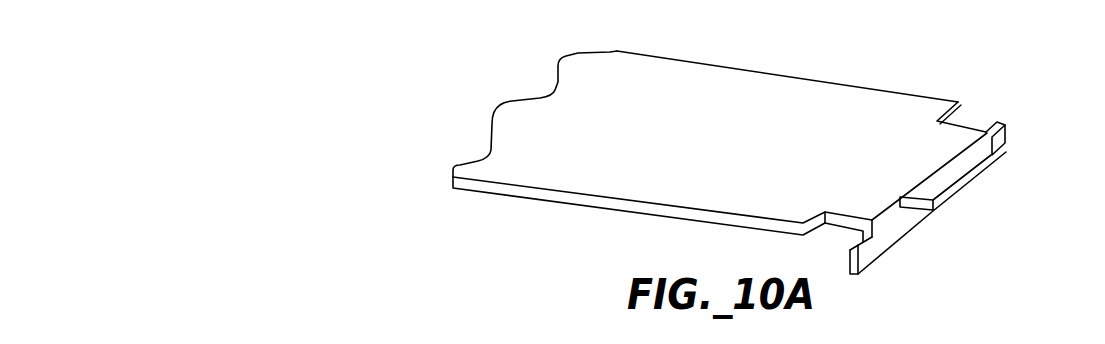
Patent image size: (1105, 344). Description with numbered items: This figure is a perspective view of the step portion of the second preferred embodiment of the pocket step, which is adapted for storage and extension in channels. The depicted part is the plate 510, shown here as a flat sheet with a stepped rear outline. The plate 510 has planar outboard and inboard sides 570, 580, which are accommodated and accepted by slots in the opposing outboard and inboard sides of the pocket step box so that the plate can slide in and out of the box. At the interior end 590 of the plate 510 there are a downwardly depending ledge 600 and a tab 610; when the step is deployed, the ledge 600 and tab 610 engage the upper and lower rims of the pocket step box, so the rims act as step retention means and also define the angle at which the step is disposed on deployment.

The plate 510 is at (735, 84).
The inboard side 580 is at (662, 56).
The outboard side 570 is at (560, 203).
The interior end 590 is at (1005, 148).
The downwardly depending ledge 600 is at (886, 234).
The tab 610 is at (961, 186).